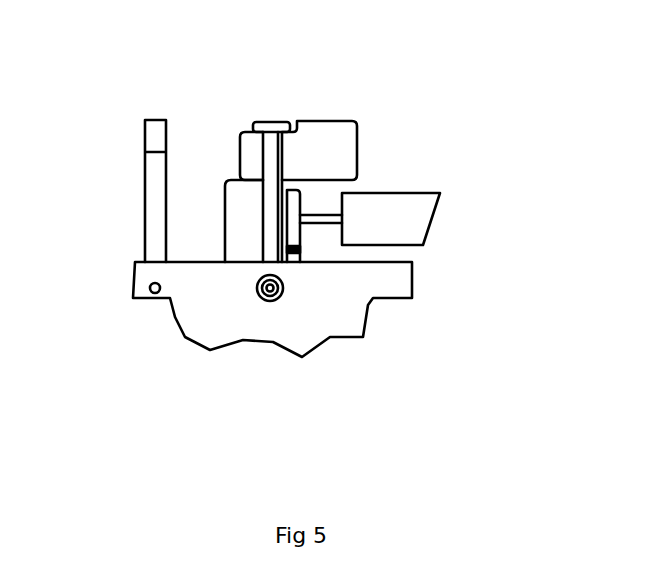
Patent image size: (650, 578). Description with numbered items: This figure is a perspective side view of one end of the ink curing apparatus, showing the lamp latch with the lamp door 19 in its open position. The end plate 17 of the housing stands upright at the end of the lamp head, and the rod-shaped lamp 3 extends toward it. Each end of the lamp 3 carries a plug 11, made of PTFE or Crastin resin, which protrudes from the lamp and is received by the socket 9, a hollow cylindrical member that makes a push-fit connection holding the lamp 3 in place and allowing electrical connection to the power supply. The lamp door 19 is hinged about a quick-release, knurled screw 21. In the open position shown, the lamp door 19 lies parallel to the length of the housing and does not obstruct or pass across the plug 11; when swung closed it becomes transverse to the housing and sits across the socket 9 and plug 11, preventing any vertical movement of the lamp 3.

The lamp 3 is at (412, 213).
The socket 9 is at (247, 235).
The plug 11 is at (292, 230).
The end plate 17 is at (152, 167).
The lamp door 19 is at (330, 147).
The knurled screw 21 is at (273, 123).